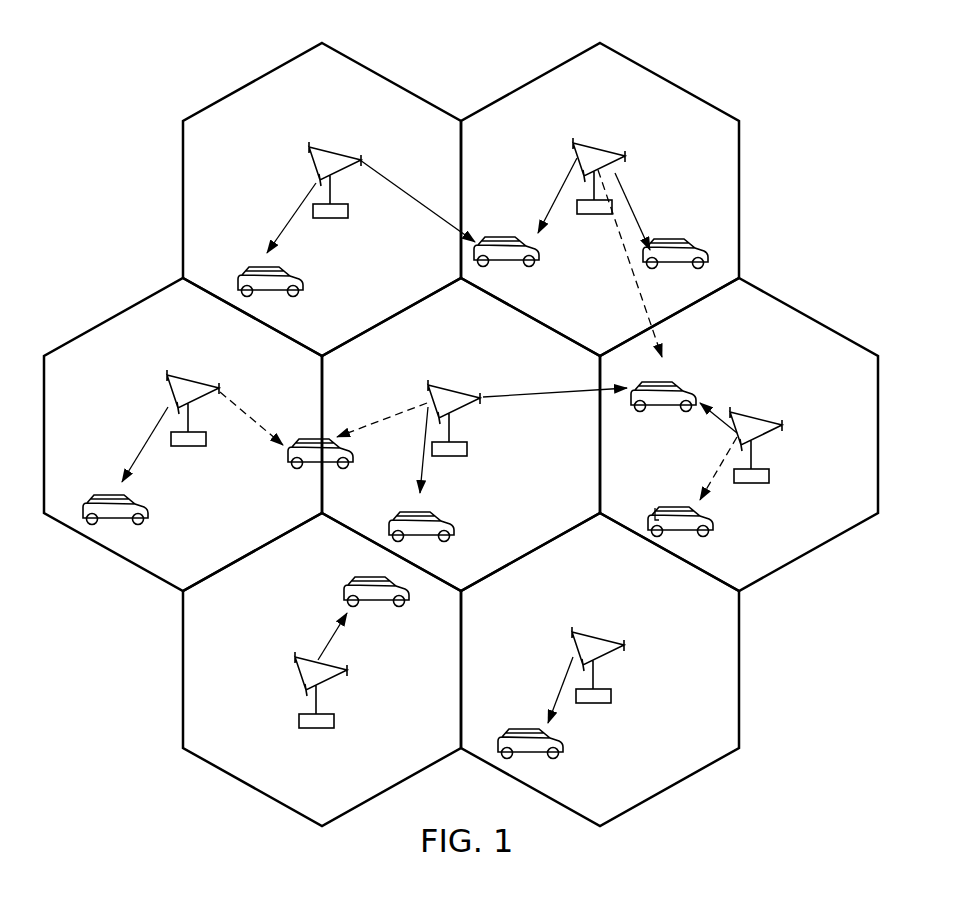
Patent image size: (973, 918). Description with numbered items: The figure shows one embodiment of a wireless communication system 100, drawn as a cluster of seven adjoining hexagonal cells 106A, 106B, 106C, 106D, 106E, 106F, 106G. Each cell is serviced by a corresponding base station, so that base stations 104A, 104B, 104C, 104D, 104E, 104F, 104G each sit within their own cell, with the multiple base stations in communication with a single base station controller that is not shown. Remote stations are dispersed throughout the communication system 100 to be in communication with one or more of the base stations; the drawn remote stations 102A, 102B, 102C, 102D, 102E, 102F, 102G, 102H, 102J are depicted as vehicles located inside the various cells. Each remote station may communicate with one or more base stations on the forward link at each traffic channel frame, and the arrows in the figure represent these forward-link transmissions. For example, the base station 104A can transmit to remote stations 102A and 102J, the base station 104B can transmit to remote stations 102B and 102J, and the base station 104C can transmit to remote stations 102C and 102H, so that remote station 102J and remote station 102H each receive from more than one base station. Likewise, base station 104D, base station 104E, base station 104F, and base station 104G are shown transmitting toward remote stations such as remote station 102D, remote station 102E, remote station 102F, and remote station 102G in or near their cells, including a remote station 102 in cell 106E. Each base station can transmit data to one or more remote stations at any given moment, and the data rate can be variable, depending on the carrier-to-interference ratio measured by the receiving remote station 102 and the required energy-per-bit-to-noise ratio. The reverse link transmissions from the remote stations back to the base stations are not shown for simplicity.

The communication system 100 is at (501, 434).
The remote station 102 is at (693, 510).
The remote station 102A is at (263, 267).
The remote station 102B is at (670, 250).
The remote station 102C is at (120, 492).
The remote station 102D is at (420, 510).
The remote station 102E is at (672, 382).
The remote station 102F is at (378, 580).
The remote station 102G is at (540, 730).
The remote station 102H is at (307, 437).
The remote station 102J is at (517, 237).
The base station 104A is at (318, 148).
The base station 104B is at (582, 148).
The base station 104C is at (173, 380).
The base station 104D is at (440, 387).
The base station 104E is at (740, 420).
The base station 104F is at (295, 657).
The base station 104G is at (580, 637).
The cell 106A is at (260, 76).
The cell 106B is at (660, 77).
The cell 106C is at (108, 320).
The cell 106D is at (461, 434).
The cell 106E is at (878, 432).
The cell 106F is at (183, 674).
The cell 106G is at (750, 632).